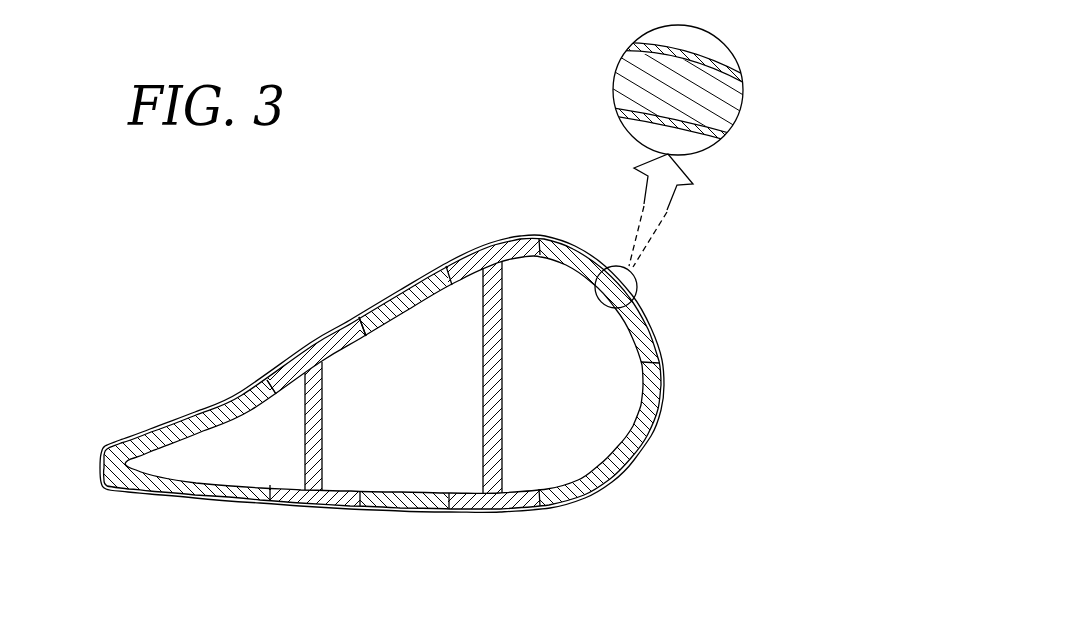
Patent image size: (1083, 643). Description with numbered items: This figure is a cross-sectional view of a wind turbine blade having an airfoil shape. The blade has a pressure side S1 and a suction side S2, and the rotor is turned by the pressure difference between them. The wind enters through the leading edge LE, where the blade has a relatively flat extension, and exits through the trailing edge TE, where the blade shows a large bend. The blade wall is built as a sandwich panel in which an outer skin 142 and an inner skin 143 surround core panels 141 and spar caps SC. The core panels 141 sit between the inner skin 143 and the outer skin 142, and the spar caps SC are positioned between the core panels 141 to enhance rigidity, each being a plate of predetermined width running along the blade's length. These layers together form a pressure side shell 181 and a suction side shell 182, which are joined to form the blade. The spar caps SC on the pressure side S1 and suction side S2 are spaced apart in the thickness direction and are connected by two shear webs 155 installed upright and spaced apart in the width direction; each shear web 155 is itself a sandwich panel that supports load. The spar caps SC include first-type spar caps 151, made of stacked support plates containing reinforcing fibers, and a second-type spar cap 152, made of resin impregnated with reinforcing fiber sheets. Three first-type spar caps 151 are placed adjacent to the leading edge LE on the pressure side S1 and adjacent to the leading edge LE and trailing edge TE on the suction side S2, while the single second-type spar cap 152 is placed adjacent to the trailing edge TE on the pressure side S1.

The core panel 141 is at (405, 508).
The outer skin 142 is at (716, 62).
The inner skin 143 is at (690, 130).
The first-type spar cap 151 is at (505, 240).
The second-type spar cap 152 is at (303, 336).
The shear web 155 is at (312, 431).
The pressure side shell 181 is at (282, 343).
The suction side shell 182 is at (583, 511).
The pressure side S1 is at (218, 400).
The suction side S2 is at (233, 505).
The trailing edge TE is at (100, 459).
The leading edge LE is at (665, 357).
The spar cap SC is at (768, 521).